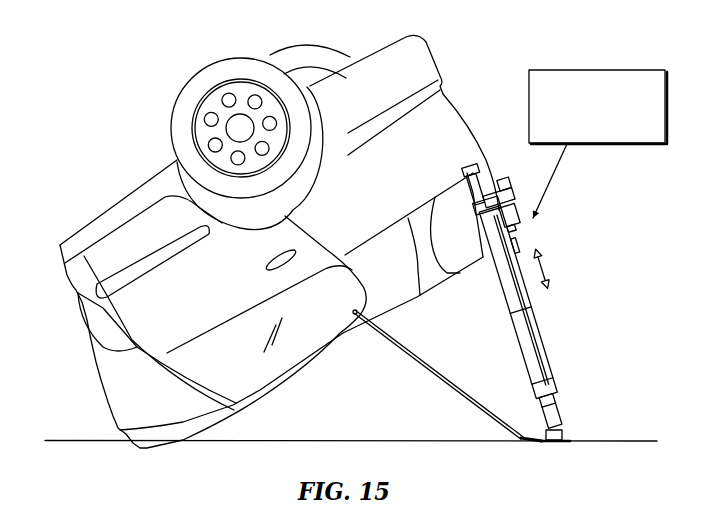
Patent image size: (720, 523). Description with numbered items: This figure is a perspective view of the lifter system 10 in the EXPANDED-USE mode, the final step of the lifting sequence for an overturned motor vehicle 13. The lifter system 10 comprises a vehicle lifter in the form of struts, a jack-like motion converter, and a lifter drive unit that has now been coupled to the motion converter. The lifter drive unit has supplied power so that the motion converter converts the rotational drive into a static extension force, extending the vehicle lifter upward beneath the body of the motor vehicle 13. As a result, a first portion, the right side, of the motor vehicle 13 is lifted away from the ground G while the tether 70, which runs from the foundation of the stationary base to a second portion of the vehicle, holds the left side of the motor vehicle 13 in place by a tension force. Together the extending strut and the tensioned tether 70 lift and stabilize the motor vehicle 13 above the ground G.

The lifter system 10 is at (522, 255).
The motor vehicle 13 is at (441, 72).
The tether 70 is at (463, 383).
The ground G is at (628, 440).